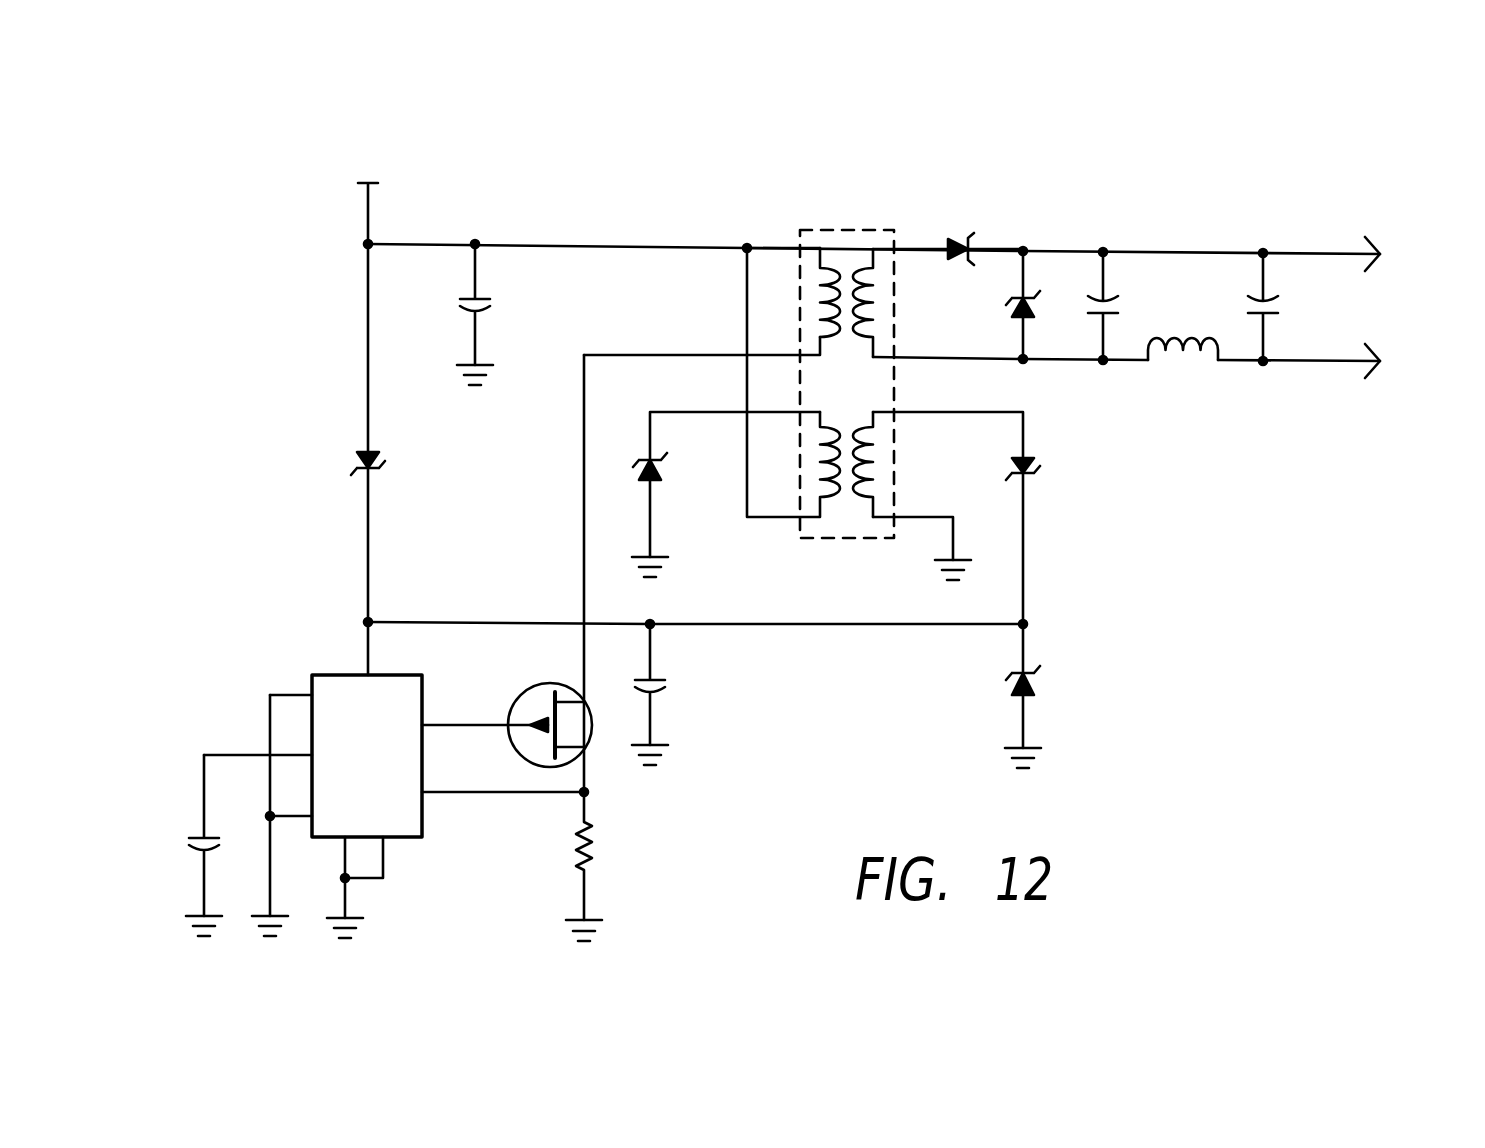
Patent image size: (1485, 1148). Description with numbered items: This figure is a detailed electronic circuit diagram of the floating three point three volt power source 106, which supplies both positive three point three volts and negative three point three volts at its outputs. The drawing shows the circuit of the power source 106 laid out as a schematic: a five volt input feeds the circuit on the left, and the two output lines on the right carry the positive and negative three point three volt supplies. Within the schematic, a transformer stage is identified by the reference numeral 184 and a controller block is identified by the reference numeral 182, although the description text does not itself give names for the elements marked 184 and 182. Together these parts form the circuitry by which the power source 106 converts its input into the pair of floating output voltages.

The floating 3.3 volt power source 106 is at (628, 210).
The transformer T2 184 is at (803, 228).
The MAX 1771 controller 182 is at (408, 820).